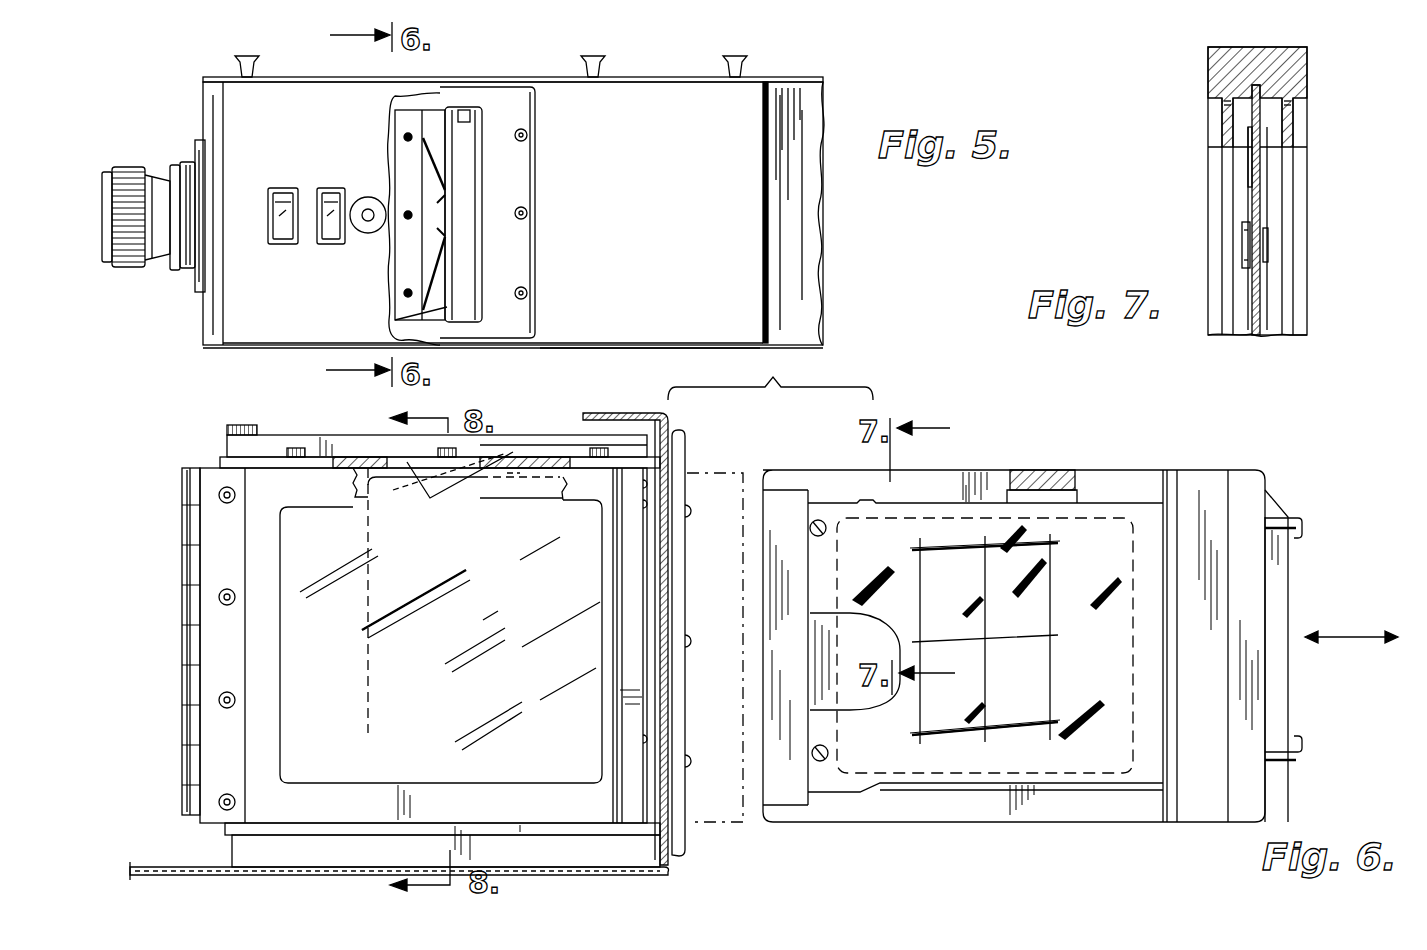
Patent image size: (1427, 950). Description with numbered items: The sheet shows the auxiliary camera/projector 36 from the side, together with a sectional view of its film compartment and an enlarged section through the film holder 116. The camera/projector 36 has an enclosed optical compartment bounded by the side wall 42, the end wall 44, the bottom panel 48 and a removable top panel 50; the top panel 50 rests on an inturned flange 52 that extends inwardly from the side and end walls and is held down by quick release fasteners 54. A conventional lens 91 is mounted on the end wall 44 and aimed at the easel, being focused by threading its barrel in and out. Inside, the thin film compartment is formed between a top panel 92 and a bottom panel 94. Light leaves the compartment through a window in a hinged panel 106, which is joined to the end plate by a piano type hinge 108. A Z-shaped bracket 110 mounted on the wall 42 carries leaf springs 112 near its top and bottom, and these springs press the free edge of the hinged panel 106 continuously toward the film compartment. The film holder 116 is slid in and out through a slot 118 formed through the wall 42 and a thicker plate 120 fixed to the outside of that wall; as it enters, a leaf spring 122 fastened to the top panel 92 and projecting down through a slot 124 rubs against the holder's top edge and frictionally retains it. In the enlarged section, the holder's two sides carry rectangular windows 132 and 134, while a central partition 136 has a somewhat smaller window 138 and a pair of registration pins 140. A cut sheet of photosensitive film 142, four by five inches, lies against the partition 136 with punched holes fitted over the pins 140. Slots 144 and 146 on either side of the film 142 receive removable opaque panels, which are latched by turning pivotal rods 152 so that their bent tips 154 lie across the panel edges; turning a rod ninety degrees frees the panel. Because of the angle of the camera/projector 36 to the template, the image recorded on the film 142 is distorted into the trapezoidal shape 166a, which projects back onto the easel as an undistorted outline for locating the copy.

In FIG. 5, the auxiliary camera/projector 36 is at (180, 362).
In FIG. 5, the side wall 42 is at (815, 276).
In FIG. 6, the side wall 42 is at (669, 424).
In FIG. 5, the end wall 44 is at (215, 325).
In FIG. 5, the bottom panel 48 is at (590, 350).
In FIG. 5, the removable top panel 50 is at (552, 74).
In FIG. 6, the inturned flange 52 is at (648, 420).
In FIG. 5, the quick release fasteners 54 is at (268, 57).
In FIG. 5, the lens 91 is at (165, 170).
In FIG. 6, the top panel of film compartment 92 is at (320, 448).
In FIG. 6, the bottom panel of film compartment 94 is at (372, 836).
In FIG. 5, the hinged panel 106 is at (395, 320).
In FIG. 6, the hinged panel 106 is at (322, 820).
In FIG. 6, the piano type hinge 108 is at (202, 742).
In FIG. 6, the Z-shaped bracket 110 is at (640, 703).
In FIG. 5, the leaf springs 112 is at (392, 166).
In FIG. 7, the film holder 116 is at (1265, 50).
In FIG. 6, the film holder 116 is at (722, 805).
In FIG. 5, the slot 118 is at (472, 232).
In FIG. 5, the thicker plate 120 is at (527, 178).
In FIG. 6, the thicker plate 120 is at (686, 457).
In FIG. 6, the leaf spring 122 is at (398, 494).
In FIG. 6, the slot in top panel 124 is at (384, 450).
In FIG. 7, the rectangular window 132 is at (1300, 164).
In FIG. 7, the rectangular window 134 is at (1215, 172).
In FIG. 7, the central partition 136 is at (1300, 78).
In FIG. 7, the rectangular window of partition 138 is at (1258, 208).
In FIG. 6, the rectangular window of partition 138 is at (992, 770).
In FIG. 7, the registration pins 140 is at (1268, 246).
In FIG. 6, the registration pins 140 is at (810, 524).
In FIG. 7, the cut sheet photosensitive film 142 is at (1245, 328).
In FIG. 6, the cut sheet photosensitive film 142 is at (1117, 747).
In FIG. 7, the slot 144 is at (1293, 110).
In FIG. 7, the slot 146 is at (1222, 118).
In FIG. 6, the pivotal rods 152 is at (1300, 516).
In FIG. 6, the bent tips 154 is at (1305, 538).
In FIG. 6, the distorted film image 166a is at (1052, 673).